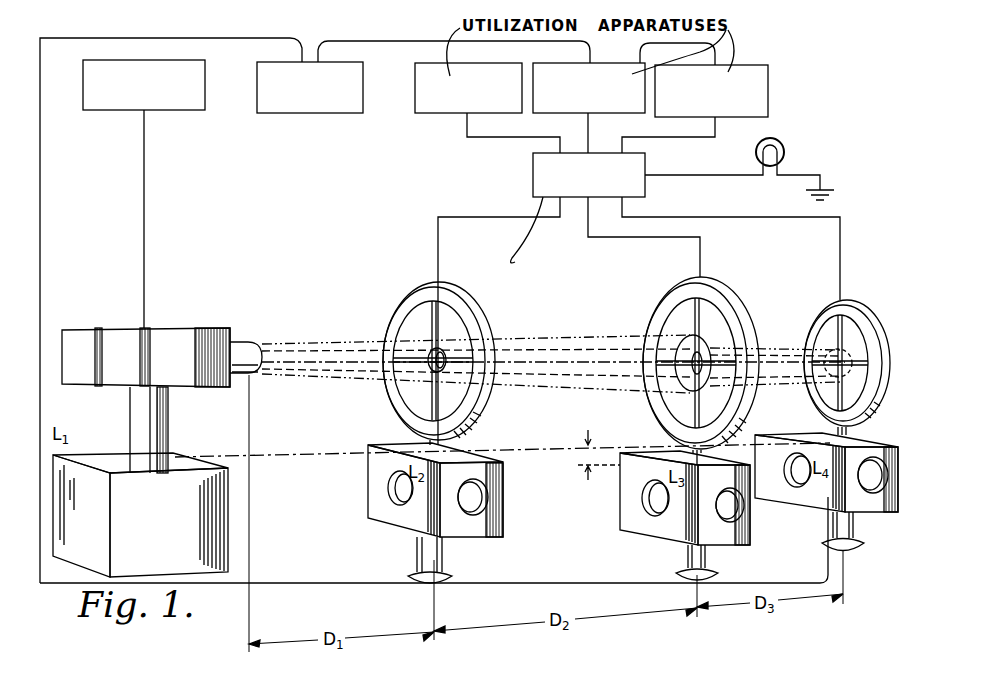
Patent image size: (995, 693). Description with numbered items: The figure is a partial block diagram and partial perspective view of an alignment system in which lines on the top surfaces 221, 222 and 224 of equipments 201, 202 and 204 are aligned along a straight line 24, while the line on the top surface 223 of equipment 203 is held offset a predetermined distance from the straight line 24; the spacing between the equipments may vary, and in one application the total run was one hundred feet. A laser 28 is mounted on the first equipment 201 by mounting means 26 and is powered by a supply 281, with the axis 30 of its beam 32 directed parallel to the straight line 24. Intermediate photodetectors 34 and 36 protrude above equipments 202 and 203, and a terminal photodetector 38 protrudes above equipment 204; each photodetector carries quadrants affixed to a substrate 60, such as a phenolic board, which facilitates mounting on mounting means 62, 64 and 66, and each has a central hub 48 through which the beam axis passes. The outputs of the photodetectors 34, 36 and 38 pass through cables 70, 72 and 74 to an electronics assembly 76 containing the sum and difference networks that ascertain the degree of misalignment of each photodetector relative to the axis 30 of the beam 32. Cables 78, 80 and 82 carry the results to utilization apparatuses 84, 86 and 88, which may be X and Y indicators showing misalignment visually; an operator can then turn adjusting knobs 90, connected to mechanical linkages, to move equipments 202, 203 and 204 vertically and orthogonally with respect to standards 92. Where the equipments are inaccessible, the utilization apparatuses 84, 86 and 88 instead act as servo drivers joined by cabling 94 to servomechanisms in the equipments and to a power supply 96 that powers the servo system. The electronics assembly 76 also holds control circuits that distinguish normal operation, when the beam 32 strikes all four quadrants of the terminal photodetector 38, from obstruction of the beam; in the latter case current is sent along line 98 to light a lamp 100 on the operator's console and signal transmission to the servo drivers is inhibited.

The equipment 201 is at (140, 515).
The equipment 202 is at (452, 540).
The equipment 203 is at (656, 536).
The equipment 204 is at (826, 504).
The top surface 221 is at (184, 455).
The top surface 222 is at (392, 443).
The top surface 223 is at (645, 452).
The top surface 224 is at (800, 436).
The straight line 24 is at (280, 458).
The mounting means 26 is at (140, 428).
The laser 28 is at (96, 328).
The supply 281 is at (170, 111).
The axis 30 is at (312, 360).
The beam 32 is at (300, 344).
The intermediate photodetector 34 is at (460, 307).
The intermediate photodetector 36 is at (732, 305).
The terminal photodetector 38 is at (860, 302).
The hub 48 is at (428, 352).
The substrate 60 is at (444, 300).
The mounting means 62 is at (400, 310).
The mounting means 64 is at (655, 316).
The mounting means 66 is at (825, 313).
The cable 70 is at (452, 216).
The cable 72 is at (587, 231).
The cable 74 is at (695, 217).
The electronics assembly 76 is at (532, 177).
The cable 78 is at (478, 138).
The cable 80 is at (597, 124).
The cable 82 is at (715, 128).
The utilization apparatus 84 is at (414, 88).
The utilization apparatus 86 is at (578, 116).
The utilization apparatus 88 is at (768, 90).
The adjusting knobs 90 is at (392, 505).
The standards 92 is at (418, 566).
The cabling 94 is at (42, 163).
The power supply 96 is at (288, 115).
The line 98 is at (678, 175).
The lamp 100 is at (784, 148).